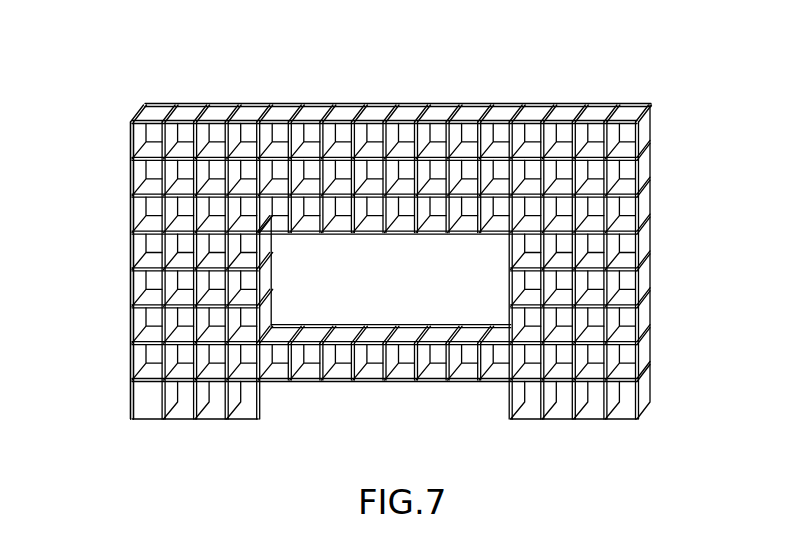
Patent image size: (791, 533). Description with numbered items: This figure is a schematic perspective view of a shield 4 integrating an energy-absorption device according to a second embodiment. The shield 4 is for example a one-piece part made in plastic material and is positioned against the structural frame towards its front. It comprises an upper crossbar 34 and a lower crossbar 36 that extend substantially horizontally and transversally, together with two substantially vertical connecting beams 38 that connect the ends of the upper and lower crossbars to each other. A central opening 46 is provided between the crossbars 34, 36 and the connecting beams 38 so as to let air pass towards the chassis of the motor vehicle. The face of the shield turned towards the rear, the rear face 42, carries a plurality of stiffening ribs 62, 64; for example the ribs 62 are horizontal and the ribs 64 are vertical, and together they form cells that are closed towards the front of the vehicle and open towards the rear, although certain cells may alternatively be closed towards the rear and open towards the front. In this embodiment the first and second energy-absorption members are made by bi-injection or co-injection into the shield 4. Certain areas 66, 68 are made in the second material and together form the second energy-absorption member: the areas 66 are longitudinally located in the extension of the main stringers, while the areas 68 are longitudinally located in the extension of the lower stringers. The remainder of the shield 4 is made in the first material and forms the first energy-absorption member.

The shield 4 is at (516, 78).
The upper crossbar 34 is at (343, 103).
The lower crossbar 36 is at (391, 386).
The vertical connecting beams 38 is at (108, 256).
The rear face 42 is at (217, 401).
The central opening 46 is at (403, 286).
The horizontal stiffening ribs 62 is at (248, 183).
The vertical stiffening ribs 64 is at (150, 208).
The areas made in the second material 66 is at (208, 181).
The areas made in the second material 68 is at (202, 356).